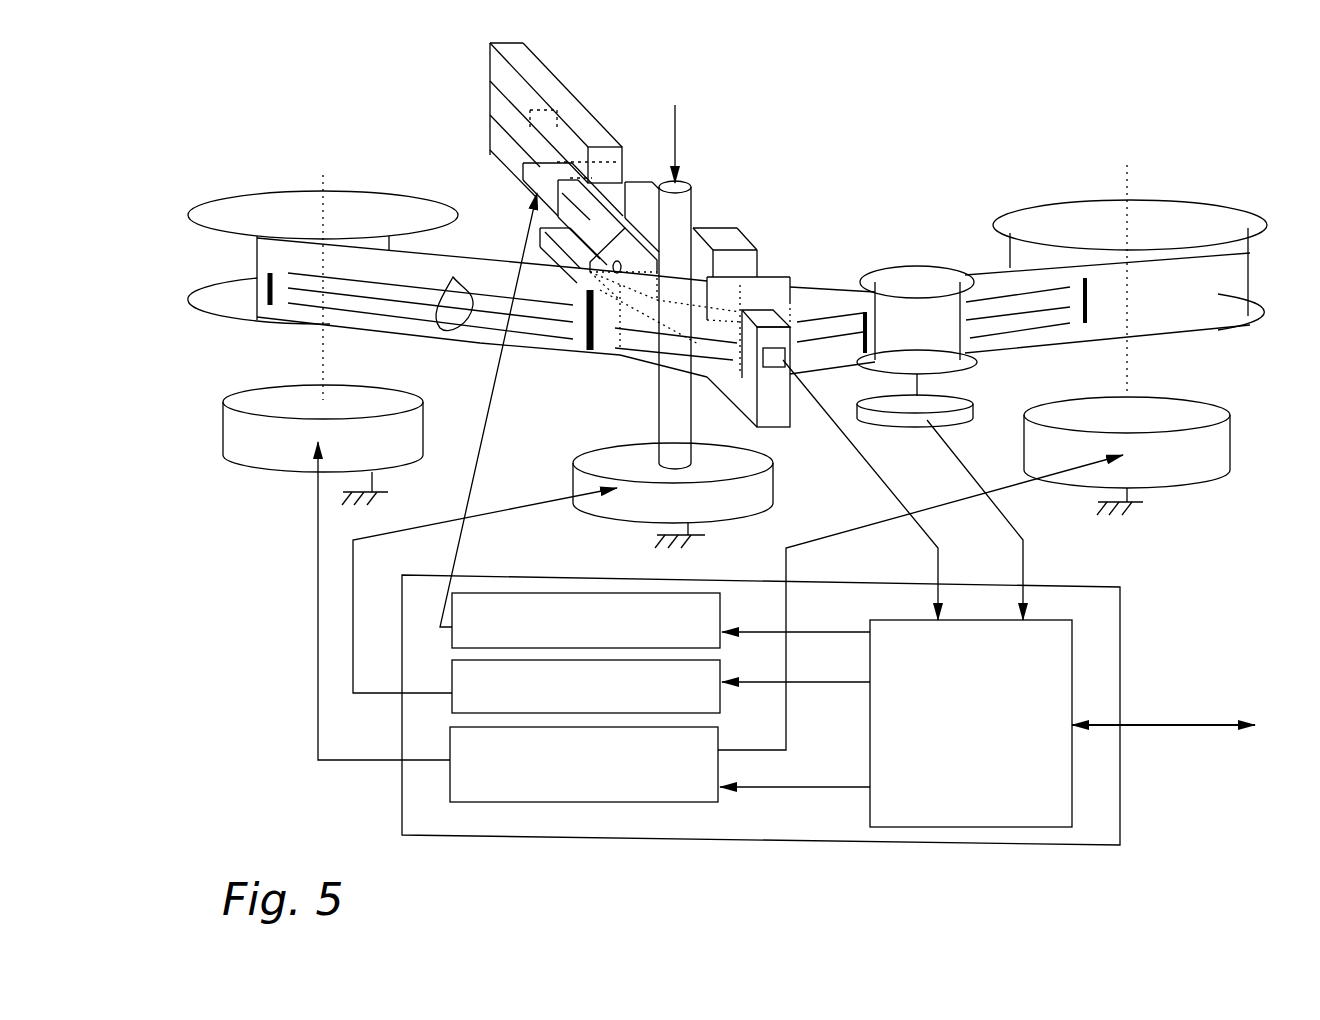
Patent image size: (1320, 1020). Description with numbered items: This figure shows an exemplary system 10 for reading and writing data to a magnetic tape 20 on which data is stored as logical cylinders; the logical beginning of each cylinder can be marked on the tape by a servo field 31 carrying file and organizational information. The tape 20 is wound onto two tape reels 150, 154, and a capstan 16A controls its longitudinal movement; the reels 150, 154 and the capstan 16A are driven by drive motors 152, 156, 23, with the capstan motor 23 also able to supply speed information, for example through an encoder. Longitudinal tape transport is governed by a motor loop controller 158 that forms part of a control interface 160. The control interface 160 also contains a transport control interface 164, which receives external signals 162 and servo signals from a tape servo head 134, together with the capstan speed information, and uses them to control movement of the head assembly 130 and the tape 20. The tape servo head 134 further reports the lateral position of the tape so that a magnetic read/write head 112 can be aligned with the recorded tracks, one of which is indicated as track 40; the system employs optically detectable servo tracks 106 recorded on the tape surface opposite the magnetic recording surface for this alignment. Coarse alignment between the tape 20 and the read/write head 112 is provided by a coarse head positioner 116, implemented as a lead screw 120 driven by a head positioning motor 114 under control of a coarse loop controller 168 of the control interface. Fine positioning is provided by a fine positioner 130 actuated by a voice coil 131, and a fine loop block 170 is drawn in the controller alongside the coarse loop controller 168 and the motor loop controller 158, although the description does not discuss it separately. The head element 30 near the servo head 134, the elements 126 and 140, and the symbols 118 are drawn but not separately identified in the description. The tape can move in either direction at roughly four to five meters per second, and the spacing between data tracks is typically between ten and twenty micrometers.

The tape transport system 10 is at (287, 607).
The tape 20 is at (566, 332).
The capstan motor 23 is at (917, 425).
The read/write head 30 is at (770, 371).
The servo field 31 is at (588, 352).
The track 40 is at (1017, 305).
The capstan 16A is at (947, 290).
The optically detectable servo track 106 is at (443, 330).
The magnetic read/write head 112 is at (773, 283).
The head positioning motor 114 is at (590, 455).
The coarse head positioner 116 is at (668, 418).
The ground 118 is at (387, 490).
The lead screw 120 is at (722, 134).
The fine actuator 126 is at (550, 177).
The fine positioner 130 is at (567, 211).
The voice coil 131 is at (533, 148).
The tape servo head 134 is at (778, 358).
The head carriage block 140 is at (493, 395).
The tape reel 150 is at (1178, 238).
The drive motor 152 is at (1190, 440).
The tape reel 154 is at (287, 220).
The drive motor 156 is at (280, 447).
The motor loop controller 158 is at (700, 800).
The control interface 160 is at (530, 583).
The external signals 162 is at (1200, 723).
The transport control interface 164 is at (971, 815).
The coarse loop controller 168 is at (703, 703).
The fine loop 170 is at (710, 615).